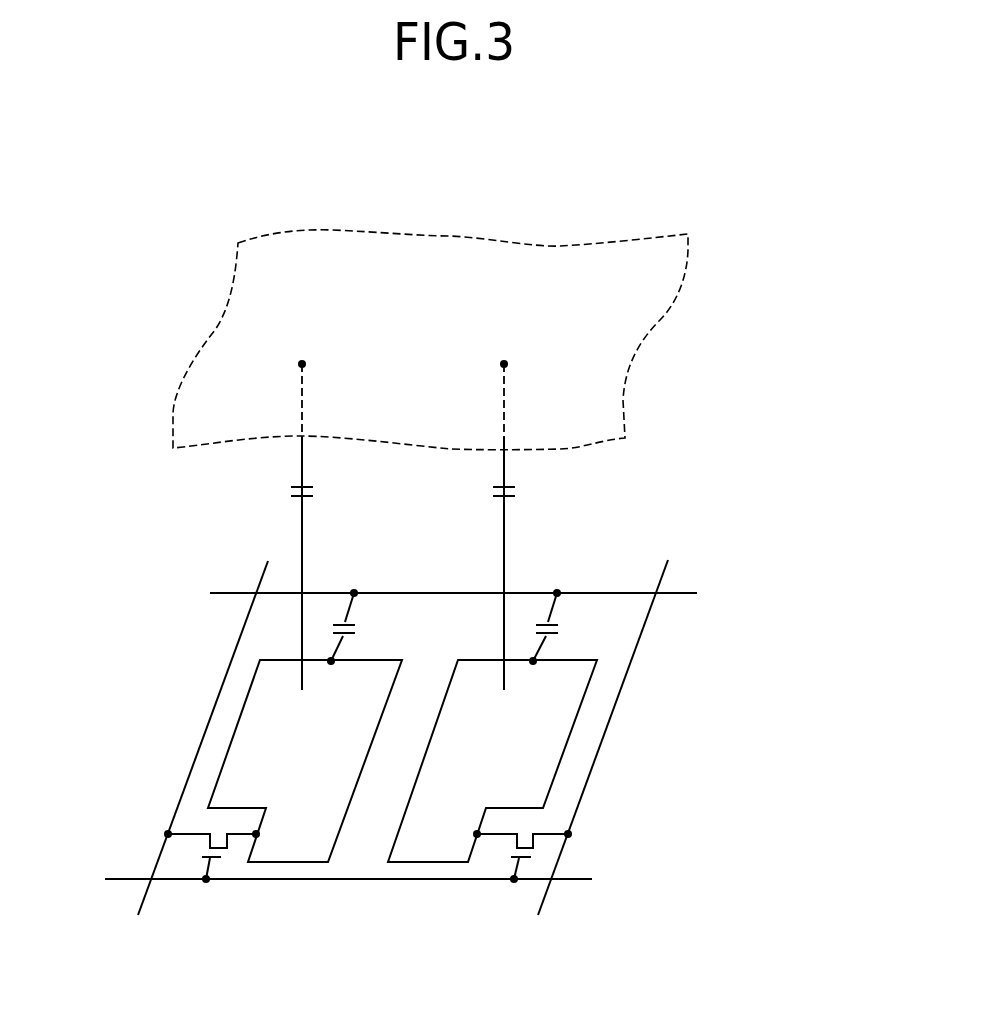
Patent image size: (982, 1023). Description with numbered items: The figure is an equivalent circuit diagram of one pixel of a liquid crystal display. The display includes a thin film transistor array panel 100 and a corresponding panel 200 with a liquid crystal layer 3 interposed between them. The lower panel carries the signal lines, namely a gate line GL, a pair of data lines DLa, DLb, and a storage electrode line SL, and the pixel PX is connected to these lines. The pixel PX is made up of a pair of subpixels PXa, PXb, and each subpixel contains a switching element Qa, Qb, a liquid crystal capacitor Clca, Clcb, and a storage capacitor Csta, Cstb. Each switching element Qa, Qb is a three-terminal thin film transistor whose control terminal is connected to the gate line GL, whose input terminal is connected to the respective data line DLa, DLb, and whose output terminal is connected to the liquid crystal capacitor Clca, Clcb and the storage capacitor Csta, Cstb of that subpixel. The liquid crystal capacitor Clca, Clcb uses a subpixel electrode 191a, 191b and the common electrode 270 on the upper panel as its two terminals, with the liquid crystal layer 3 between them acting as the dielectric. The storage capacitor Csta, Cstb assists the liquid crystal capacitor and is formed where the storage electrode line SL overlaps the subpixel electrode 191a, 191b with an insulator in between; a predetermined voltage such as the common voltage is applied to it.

The common electrode 270 is at (682, 290).
The corresponding panel 200 is at (498, 340).
The liquid crystal layer 3 is at (553, 525).
The thin film transistor array panel 100 is at (442, 707).
The subpixel electrode 191a is at (290, 862).
The subpixel electrode 191b is at (570, 730).
The pixel PX is at (417, 910).
The subpixel PXa is at (221, 688).
The subpixel PXb is at (575, 678).
The data line DLa is at (214, 721).
The data line DLb is at (613, 721).
The storage electrode line SL is at (434, 592).
The gate line GL is at (366, 878).
The switching element Qa is at (212, 856).
The switching element Qb is at (522, 856).
The liquid crystal capacitor Clca is at (326, 563).
The liquid crystal capacitor Clcb is at (529, 563).
The storage capacitor Csta is at (367, 627).
The storage capacitor Cstb is at (569, 627).